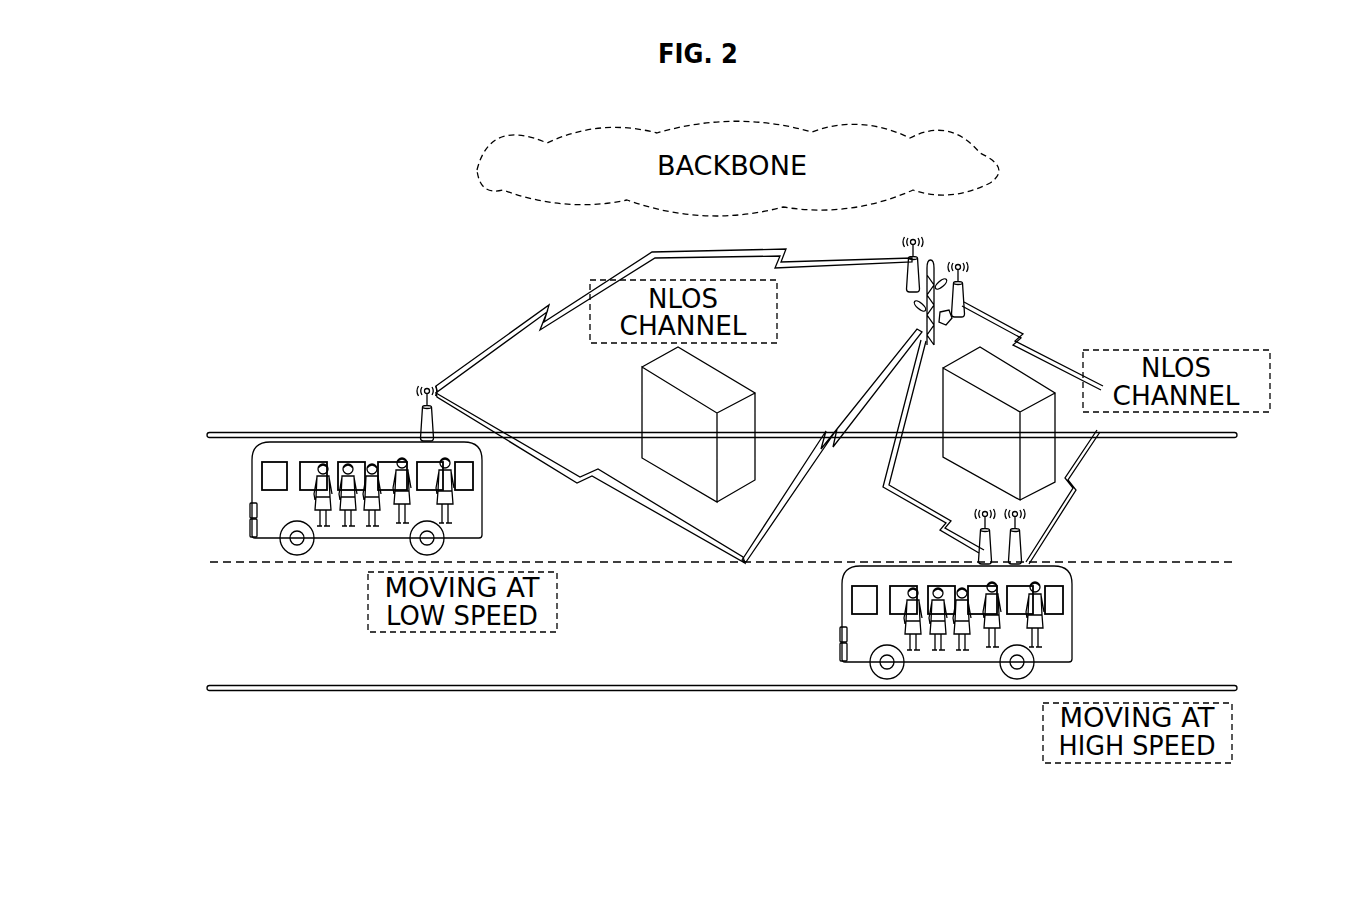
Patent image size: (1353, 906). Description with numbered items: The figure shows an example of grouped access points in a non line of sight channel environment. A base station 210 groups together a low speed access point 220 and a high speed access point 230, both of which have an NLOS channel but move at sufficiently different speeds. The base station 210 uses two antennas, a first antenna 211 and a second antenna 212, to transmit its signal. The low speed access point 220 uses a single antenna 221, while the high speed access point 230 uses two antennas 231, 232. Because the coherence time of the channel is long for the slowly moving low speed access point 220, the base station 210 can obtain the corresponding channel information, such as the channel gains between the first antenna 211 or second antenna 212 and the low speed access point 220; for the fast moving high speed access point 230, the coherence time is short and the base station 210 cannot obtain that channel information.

The base station 210 is at (928, 260).
The first antenna 211 is at (910, 272).
The second antenna 212 is at (963, 284).
The low speed access point 220 is at (252, 480).
The antenna 221 is at (423, 408).
The high speed access point 230 is at (1070, 622).
The antenna 231 is at (978, 538).
The antenna 232 is at (1023, 542).